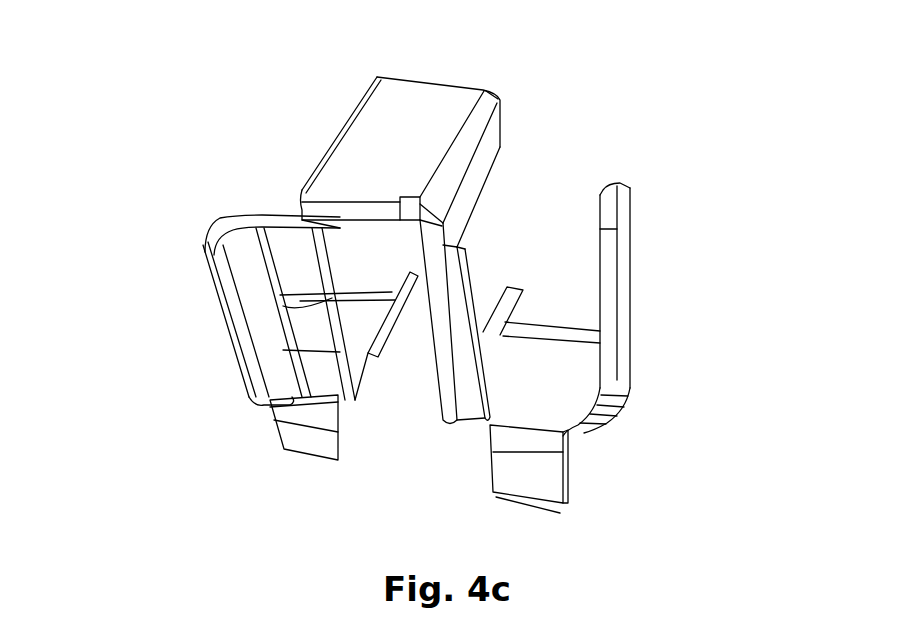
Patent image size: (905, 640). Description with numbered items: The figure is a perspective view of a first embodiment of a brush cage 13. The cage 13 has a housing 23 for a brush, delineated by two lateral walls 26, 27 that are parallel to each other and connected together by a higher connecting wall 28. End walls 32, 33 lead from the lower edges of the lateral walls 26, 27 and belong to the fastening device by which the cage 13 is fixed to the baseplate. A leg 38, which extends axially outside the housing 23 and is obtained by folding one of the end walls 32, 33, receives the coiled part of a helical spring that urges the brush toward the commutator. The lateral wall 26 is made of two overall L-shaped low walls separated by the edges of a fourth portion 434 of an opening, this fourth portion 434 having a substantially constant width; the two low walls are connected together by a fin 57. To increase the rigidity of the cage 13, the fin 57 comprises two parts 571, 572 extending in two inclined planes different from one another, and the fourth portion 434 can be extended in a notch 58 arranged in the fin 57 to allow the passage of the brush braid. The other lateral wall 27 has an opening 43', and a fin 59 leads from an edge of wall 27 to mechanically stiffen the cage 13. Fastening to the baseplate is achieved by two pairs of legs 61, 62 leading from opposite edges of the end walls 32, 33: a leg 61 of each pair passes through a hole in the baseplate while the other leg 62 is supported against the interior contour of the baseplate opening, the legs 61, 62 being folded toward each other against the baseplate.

The brush cage 13 is at (218, 90).
The higher connecting wall 28 is at (367, 147).
The lateral wall 27 is at (500, 132).
The opening 43' is at (587, 154).
The fin 59 is at (460, 313).
The leg 38 is at (612, 270).
The leg 61 is at (576, 318).
The end wall 33 is at (560, 393).
The leg 62 is at (547, 488).
The fin 57 is at (217, 289).
The part of fin 571 is at (275, 233).
The part of fin 572 is at (230, 248).
The notch 58 is at (297, 316).
The end wall 32 is at (336, 318).
The fourth portion 434 is at (347, 313).
The lateral wall 26 is at (370, 377).
The housing 23 is at (353, 237).